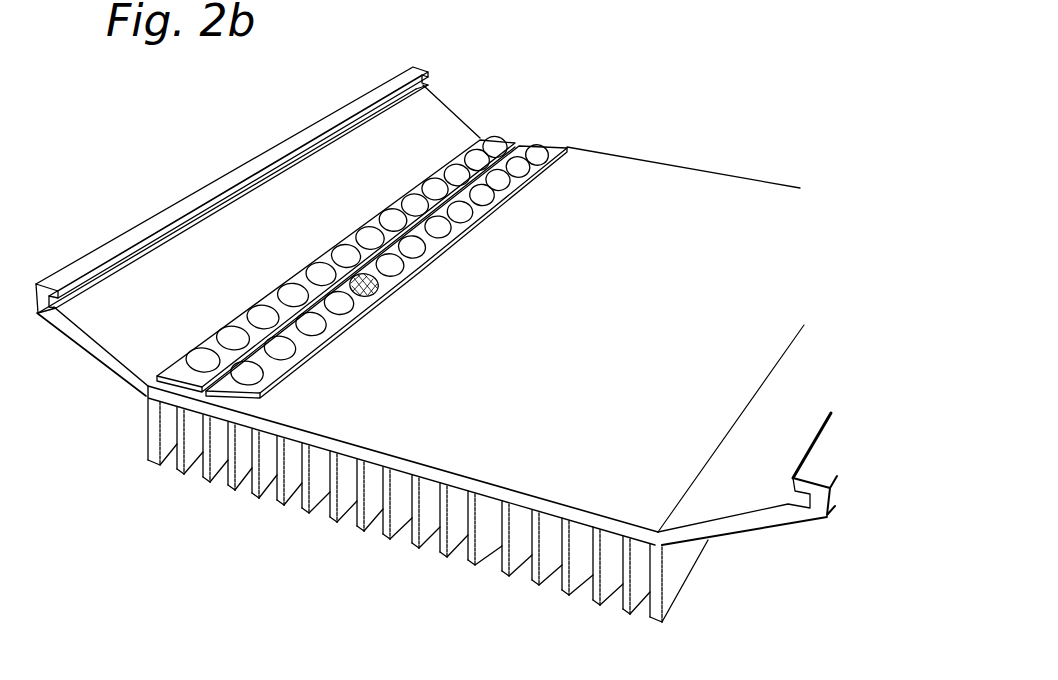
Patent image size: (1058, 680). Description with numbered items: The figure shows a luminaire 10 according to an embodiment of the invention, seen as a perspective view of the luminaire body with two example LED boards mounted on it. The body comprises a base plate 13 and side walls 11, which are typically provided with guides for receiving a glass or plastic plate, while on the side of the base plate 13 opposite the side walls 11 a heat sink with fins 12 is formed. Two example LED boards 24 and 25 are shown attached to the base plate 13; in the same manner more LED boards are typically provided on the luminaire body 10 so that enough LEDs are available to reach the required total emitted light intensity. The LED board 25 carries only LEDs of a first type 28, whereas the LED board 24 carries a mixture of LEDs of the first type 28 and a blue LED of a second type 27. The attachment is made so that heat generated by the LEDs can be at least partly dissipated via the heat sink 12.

The luminaire 10 is at (633, 150).
The side walls 11 is at (116, 250).
The heat sink with fins 12 is at (360, 520).
The base plate 13 is at (545, 410).
The electronics board 24 is at (567, 150).
The electronics board 25 is at (513, 143).
The LED of a second type 27 is at (385, 294).
The LED of a first type 28 is at (470, 160).